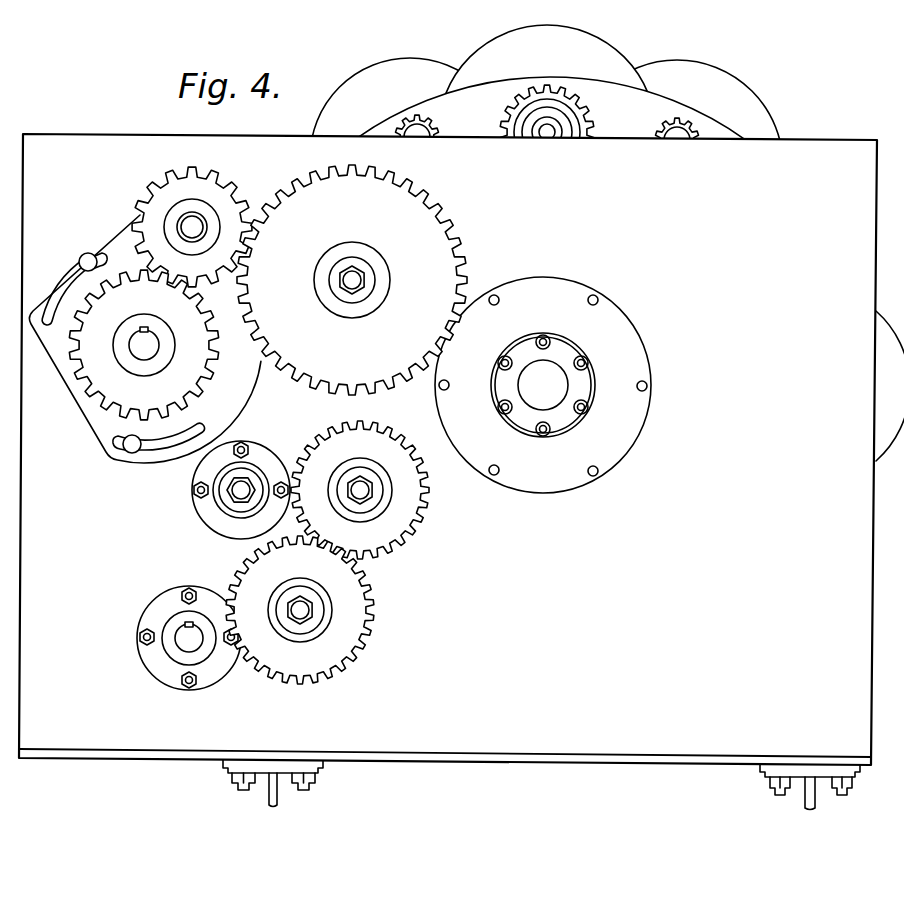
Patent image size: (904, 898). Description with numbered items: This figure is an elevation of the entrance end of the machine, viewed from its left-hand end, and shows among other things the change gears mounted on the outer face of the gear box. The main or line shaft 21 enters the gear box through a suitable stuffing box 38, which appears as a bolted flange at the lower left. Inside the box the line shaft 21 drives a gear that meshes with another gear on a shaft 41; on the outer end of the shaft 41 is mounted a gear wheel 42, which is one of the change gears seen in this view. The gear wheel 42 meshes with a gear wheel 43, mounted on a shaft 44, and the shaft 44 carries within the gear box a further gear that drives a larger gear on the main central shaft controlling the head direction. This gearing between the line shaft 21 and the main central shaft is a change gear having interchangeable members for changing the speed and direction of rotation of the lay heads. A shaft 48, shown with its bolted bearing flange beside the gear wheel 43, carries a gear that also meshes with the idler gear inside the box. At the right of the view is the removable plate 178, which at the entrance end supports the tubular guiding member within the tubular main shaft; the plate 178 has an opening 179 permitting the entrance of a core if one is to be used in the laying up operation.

The removable plate 178 is at (553, 385).
The opening 179 is at (543, 385).
The shaft 48 is at (238, 490).
The shaft 44 is at (373, 497).
The gear wheel 43 is at (378, 494).
The stuffing box 38 is at (173, 646).
The main or line shaft 21 is at (186, 641).
The shaft 41 is at (297, 613).
The gear wheel 42 is at (300, 623).